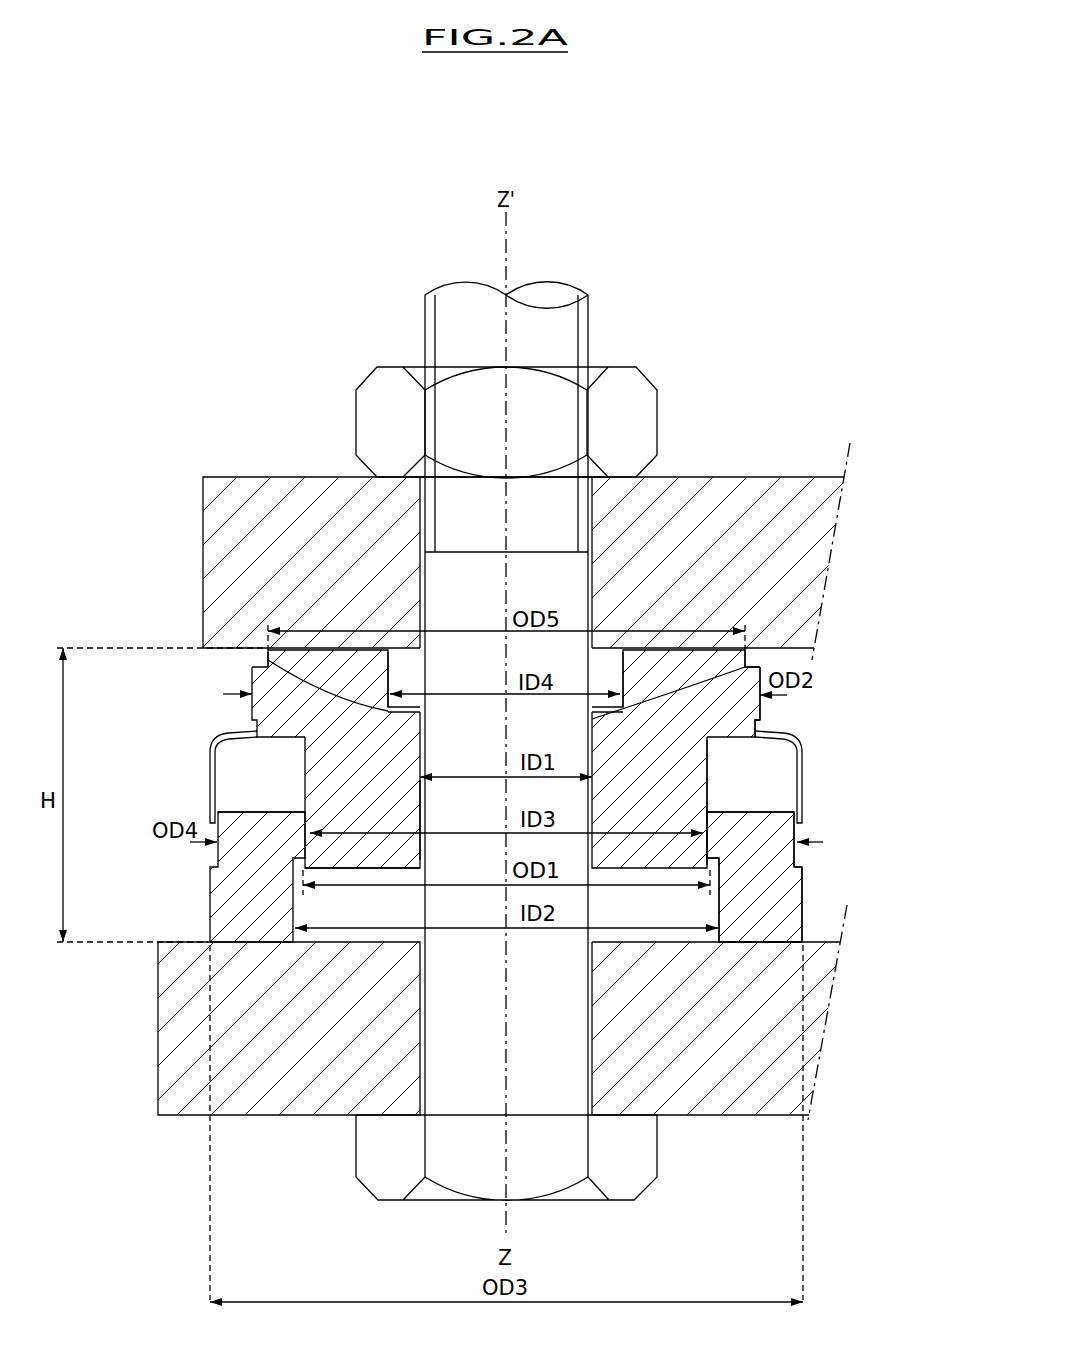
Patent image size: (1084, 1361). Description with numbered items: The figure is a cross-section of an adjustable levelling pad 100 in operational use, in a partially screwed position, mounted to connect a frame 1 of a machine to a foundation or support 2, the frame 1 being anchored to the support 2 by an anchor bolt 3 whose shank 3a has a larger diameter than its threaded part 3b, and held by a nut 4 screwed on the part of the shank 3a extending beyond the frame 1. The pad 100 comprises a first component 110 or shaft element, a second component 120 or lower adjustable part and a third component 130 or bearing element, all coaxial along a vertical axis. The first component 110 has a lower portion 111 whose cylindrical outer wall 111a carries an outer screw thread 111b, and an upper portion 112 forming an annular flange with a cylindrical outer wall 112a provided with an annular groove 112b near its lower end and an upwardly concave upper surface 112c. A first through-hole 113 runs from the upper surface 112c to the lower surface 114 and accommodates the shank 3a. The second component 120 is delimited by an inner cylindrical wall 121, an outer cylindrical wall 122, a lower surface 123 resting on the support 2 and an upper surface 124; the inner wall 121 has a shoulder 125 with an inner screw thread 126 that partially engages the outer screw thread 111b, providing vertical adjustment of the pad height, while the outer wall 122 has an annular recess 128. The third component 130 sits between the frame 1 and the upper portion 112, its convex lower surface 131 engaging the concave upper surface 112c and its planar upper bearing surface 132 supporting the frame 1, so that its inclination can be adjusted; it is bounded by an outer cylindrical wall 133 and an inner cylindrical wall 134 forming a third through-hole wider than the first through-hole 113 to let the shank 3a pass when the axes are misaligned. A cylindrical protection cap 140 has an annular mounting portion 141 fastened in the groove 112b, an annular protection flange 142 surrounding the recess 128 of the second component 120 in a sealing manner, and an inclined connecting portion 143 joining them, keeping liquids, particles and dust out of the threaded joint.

The frame 1 is at (205, 568).
The support 2 is at (162, 1050).
The anchor bolt 3 is at (613, 771).
The shank 3a is at (547, 1065).
The threaded part 3b is at (582, 322).
The nut 4 is at (388, 366).
The adjustable levelling pad 100 is at (858, 817).
The first component 110 is at (243, 714).
The lower portion 111 is at (333, 848).
The cylindrical outer wall 111a is at (707, 762).
The outer screw thread 111b is at (707, 783).
The upper portion 112 is at (253, 688).
The cylindrical outer wall 112a is at (760, 713).
The annular groove 112b is at (762, 722).
The upper surface 112c is at (735, 672).
The first through-hole 113 is at (424, 818).
The lower surface 114 is at (367, 868).
The second component 120 is at (200, 883).
The inner cylindrical wall 121 is at (715, 912).
The outer cylindrical wall 122 is at (803, 912).
The lower surface 123 is at (763, 943).
The upper surface 124 is at (735, 813).
The shoulder 125 is at (722, 867).
The inner screw thread 126 is at (790, 888).
The annular recess 128 is at (800, 853).
The third component 130 is at (257, 660).
The lower surface 131 is at (367, 705).
The upper bearing surface 132 is at (315, 683).
The outer cylindrical wall 133 is at (267, 664).
The inner cylindrical wall 134 is at (623, 680).
The protection cap 140 is at (489, 768).
The annular mounting portion 141 is at (248, 726).
The annular protection flange 142 is at (211, 777).
The connecting portion 143 is at (224, 738).